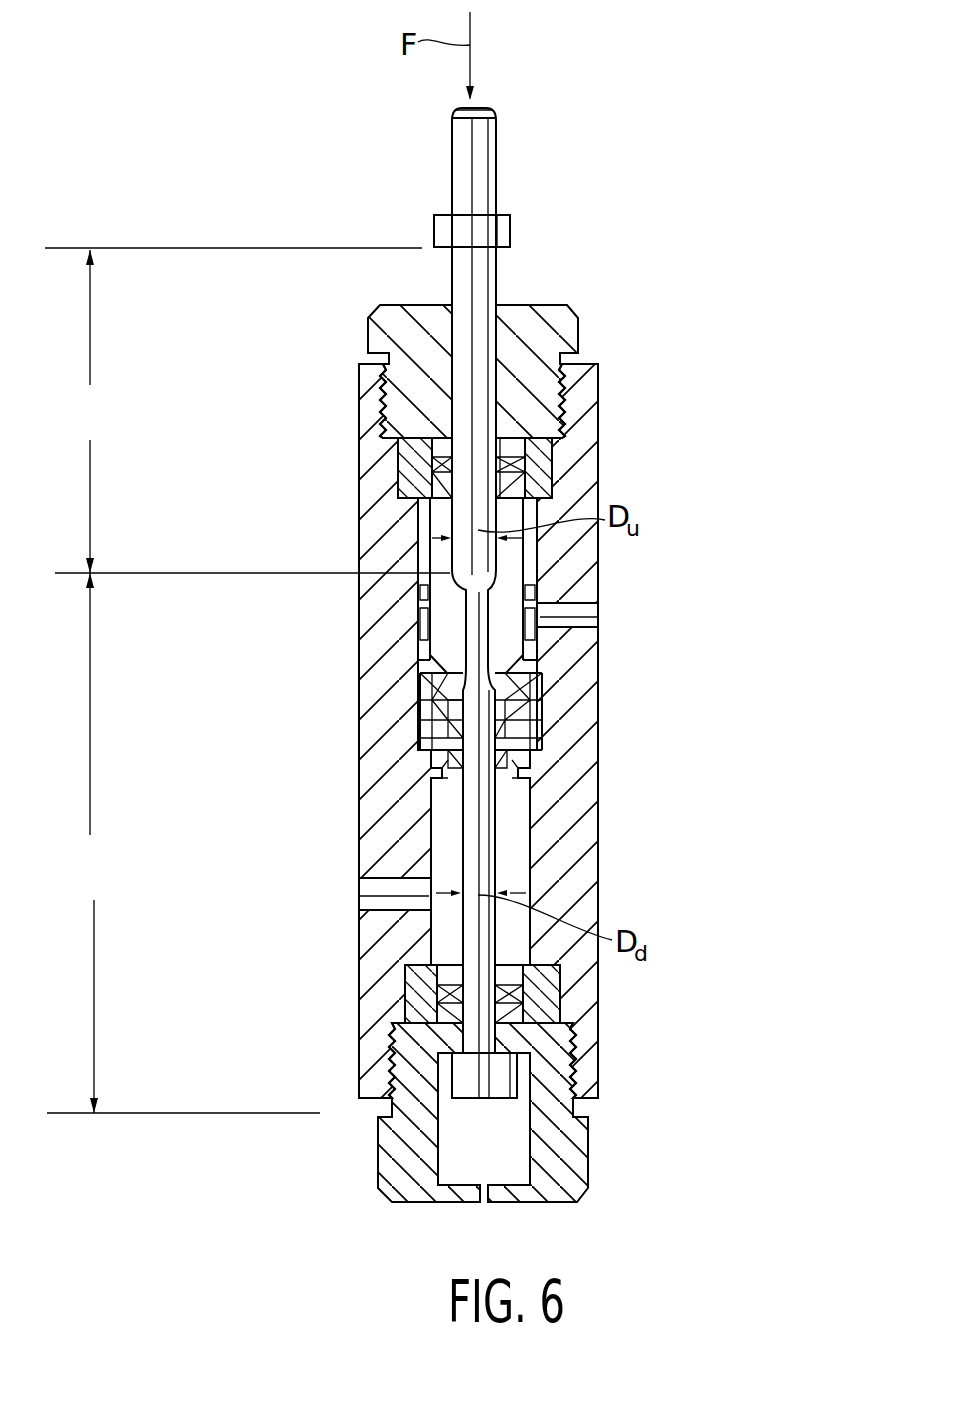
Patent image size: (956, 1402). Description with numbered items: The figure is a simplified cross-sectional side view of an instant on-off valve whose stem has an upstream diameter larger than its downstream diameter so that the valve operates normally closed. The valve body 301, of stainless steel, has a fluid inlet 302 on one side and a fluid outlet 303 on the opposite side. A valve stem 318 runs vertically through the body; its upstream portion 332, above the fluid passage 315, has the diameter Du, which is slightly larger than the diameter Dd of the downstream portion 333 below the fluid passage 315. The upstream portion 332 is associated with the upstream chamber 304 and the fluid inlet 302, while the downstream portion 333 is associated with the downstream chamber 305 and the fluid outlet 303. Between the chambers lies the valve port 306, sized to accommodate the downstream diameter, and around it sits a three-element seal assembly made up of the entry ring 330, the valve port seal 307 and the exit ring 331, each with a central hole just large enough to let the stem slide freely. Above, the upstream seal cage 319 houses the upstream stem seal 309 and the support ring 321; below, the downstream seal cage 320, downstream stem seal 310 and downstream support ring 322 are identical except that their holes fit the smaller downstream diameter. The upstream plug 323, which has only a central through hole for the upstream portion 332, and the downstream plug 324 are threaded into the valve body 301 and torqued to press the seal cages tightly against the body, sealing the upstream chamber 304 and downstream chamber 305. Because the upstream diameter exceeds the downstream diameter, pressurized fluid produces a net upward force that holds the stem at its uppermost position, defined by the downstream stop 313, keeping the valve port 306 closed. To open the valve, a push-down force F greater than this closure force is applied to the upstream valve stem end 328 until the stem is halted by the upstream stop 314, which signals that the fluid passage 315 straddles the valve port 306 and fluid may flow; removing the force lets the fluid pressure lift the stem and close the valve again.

The valve body 301 is at (577, 870).
The fluid inlet 302 is at (610, 612).
The fluid outlet 303 is at (352, 898).
The upstream chamber 304 is at (436, 670).
The downstream chamber 305 is at (508, 830).
The valve port 306 is at (520, 683).
The valve port seal 307 is at (427, 727).
The upstream stem seal 309 is at (420, 496).
The downstream stem seal 310 is at (437, 985).
The downstream stop 313 is at (500, 1080).
The upstream stop 314 is at (440, 232).
The fluid passage 315 is at (458, 618).
The valve stem 318 is at (500, 280).
The upstream seal cage 319 is at (538, 461).
The downstream seal cage 320 is at (542, 1002).
The support ring 321 is at (405, 457).
The downstream support ring 322 is at (440, 1012).
The upstream plug 323 is at (562, 322).
The downstream plug 324 is at (390, 1178).
The upstream valve stem end 328 is at (478, 106).
The entry ring 330 is at (520, 715).
The exit ring 331 is at (518, 740).
The upstream portion 332 is at (247, 410).
The downstream portion 333 is at (183, 843).